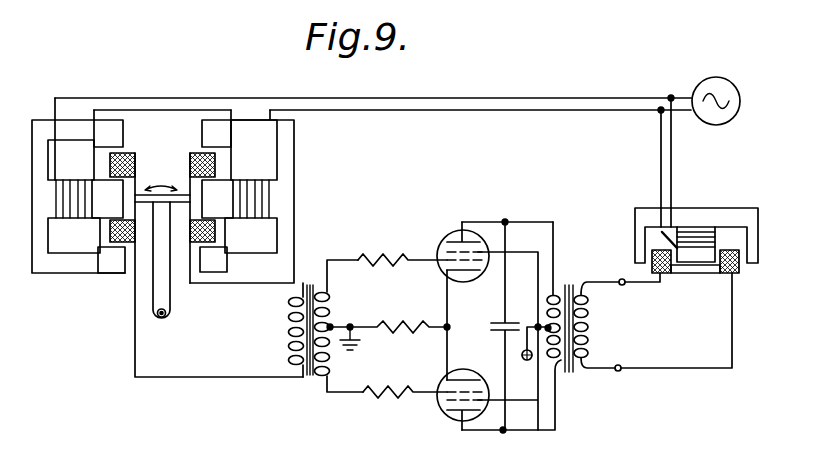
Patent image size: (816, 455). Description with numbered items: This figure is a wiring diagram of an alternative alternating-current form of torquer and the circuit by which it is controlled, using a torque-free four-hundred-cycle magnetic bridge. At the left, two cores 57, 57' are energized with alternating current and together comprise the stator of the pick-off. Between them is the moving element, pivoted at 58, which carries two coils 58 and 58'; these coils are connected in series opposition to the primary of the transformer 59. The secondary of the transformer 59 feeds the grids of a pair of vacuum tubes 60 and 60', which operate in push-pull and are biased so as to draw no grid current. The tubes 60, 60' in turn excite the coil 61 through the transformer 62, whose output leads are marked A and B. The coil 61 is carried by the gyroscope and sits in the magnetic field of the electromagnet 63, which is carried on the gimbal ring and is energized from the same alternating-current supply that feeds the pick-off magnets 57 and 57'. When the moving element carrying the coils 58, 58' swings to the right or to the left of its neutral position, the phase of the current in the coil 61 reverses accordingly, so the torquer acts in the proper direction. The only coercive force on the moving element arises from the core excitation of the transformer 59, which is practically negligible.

The core 57 is at (78, 204).
The core 57' is at (263, 196).
The coil 58 is at (179, 265).
The coil 58' is at (221, 218).
The transformer 59 is at (310, 377).
The vacuum tube 60 is at (454, 241).
The vacuum tube 60' is at (446, 402).
The coil 61 is at (735, 273).
The transformer 62 is at (572, 276).
The electromagnet 63 is at (733, 208).
The output terminal A is at (621, 279).
The output terminal B is at (619, 371).